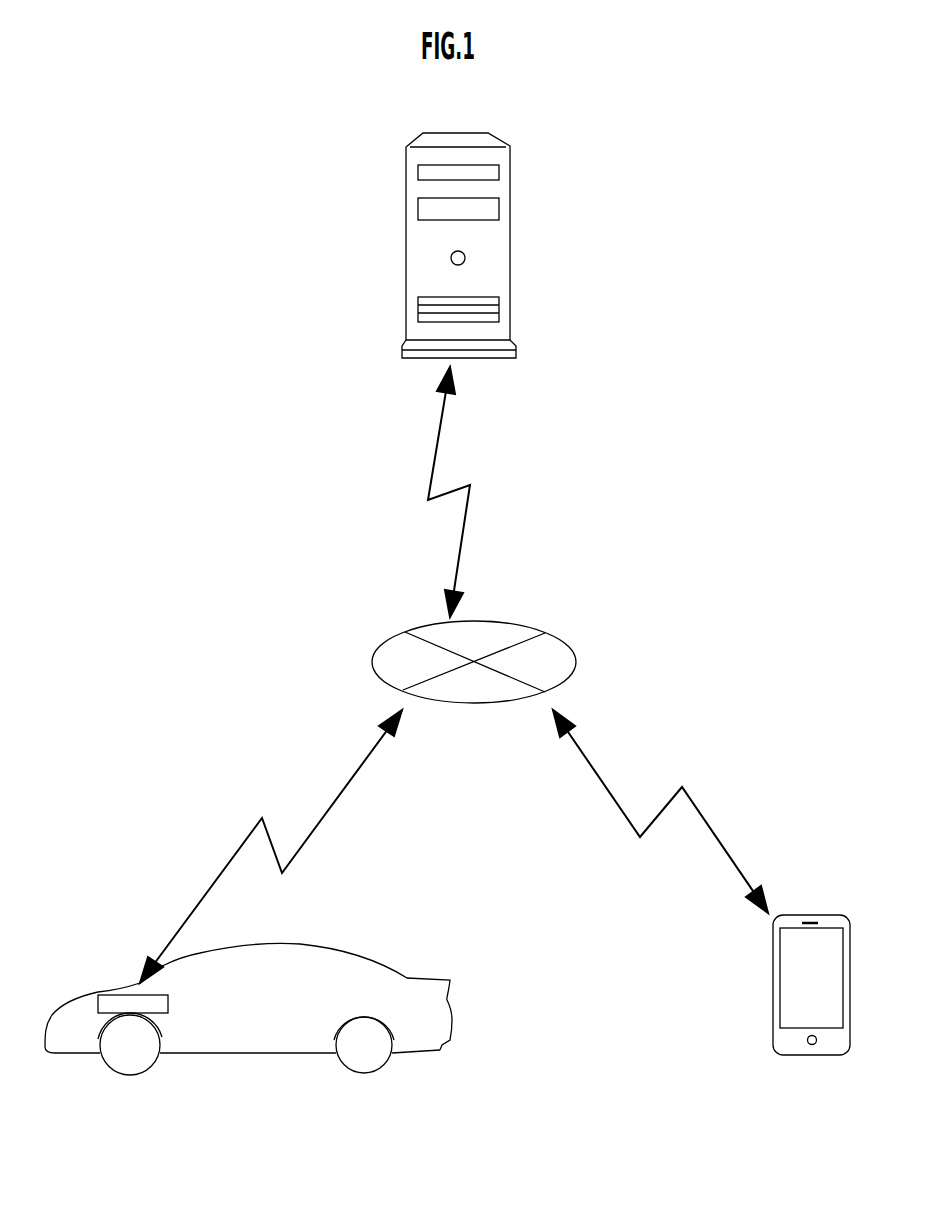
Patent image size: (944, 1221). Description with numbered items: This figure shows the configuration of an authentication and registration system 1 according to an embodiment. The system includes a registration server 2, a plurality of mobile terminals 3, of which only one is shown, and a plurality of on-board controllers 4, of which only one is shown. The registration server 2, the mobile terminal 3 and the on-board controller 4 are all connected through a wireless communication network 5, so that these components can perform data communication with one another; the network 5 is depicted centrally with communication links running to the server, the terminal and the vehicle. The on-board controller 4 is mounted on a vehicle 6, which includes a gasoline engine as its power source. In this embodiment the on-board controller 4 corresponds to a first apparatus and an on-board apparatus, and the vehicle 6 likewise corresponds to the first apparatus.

The authentication and registration system 1 is at (722, 215).
The registration server 2 is at (477, 132).
The mobile terminal 3 is at (825, 915).
The on-board controller 4 is at (115, 992).
The wireless communication network 5 is at (498, 622).
The vehicle 6 is at (315, 943).